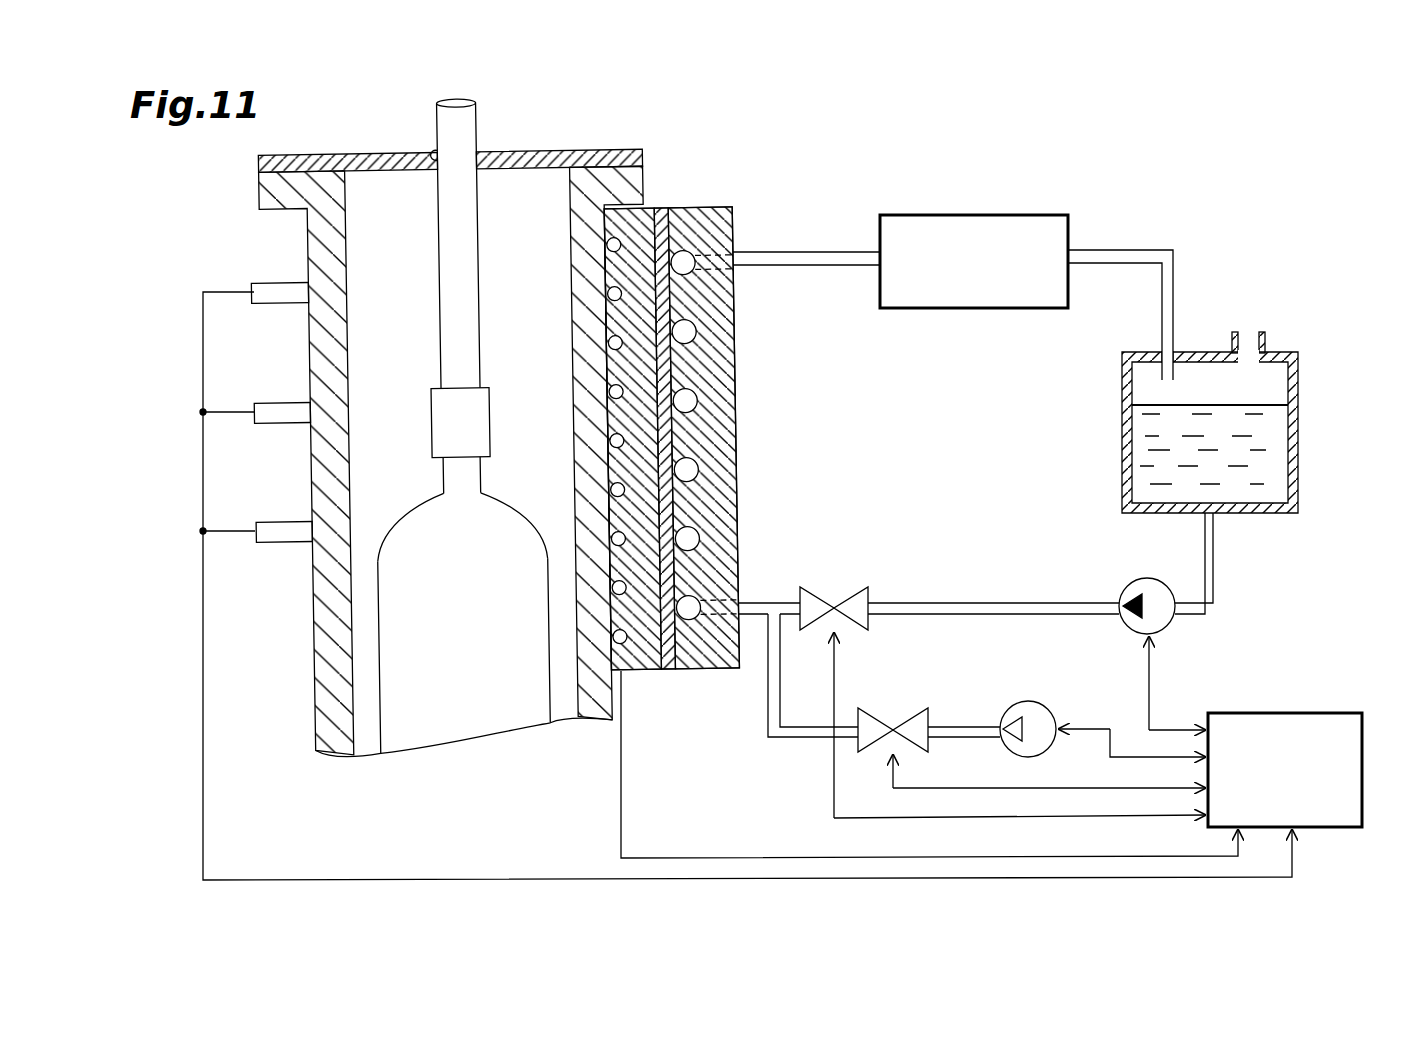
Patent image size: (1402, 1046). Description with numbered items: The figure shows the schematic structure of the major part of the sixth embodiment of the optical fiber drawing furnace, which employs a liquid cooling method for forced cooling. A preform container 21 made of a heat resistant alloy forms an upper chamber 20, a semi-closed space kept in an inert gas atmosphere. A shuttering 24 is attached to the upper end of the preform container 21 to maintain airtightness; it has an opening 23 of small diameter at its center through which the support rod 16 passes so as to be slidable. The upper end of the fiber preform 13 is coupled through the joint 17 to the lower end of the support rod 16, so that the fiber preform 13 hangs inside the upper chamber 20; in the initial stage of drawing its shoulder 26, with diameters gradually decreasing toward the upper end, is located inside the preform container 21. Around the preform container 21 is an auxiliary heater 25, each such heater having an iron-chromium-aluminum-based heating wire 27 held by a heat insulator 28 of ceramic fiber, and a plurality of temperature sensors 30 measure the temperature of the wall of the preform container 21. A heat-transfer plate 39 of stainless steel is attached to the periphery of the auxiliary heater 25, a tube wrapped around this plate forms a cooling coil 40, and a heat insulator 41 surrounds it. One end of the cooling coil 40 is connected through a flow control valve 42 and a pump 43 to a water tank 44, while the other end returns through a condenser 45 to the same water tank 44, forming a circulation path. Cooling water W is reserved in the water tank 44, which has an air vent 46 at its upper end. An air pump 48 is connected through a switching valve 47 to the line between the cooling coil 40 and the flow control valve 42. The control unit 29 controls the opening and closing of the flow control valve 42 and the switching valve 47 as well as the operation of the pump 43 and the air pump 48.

The fiber preform 13 is at (393, 647).
The support rod 16 is at (462, 315).
The joint 17 is at (447, 428).
The upper chamber 20 is at (540, 195).
The preform container 21 is at (592, 708).
The opening 23 is at (437, 151).
The shuttering 24 is at (512, 156).
The auxiliary heater 25 is at (633, 677).
The shoulder 26 is at (510, 520).
The heating wire 27 is at (610, 345).
The heat insulator 28 is at (658, 227).
The control unit 29 is at (1308, 712).
The temperature sensor 30 is at (272, 290).
The heat-transfer plate 39 is at (665, 376).
The cooling coil 40 is at (698, 470).
The heat insulator 41 is at (723, 335).
The flow control valve 42 is at (853, 588).
The pump 43 is at (1163, 620).
The water tank 44 is at (1297, 384).
The condenser 45 is at (995, 214).
The air vent 46 is at (1248, 332).
The switching valve 47 is at (917, 710).
The air pump 48 is at (1042, 699).
The cooling water W is at (1278, 464).